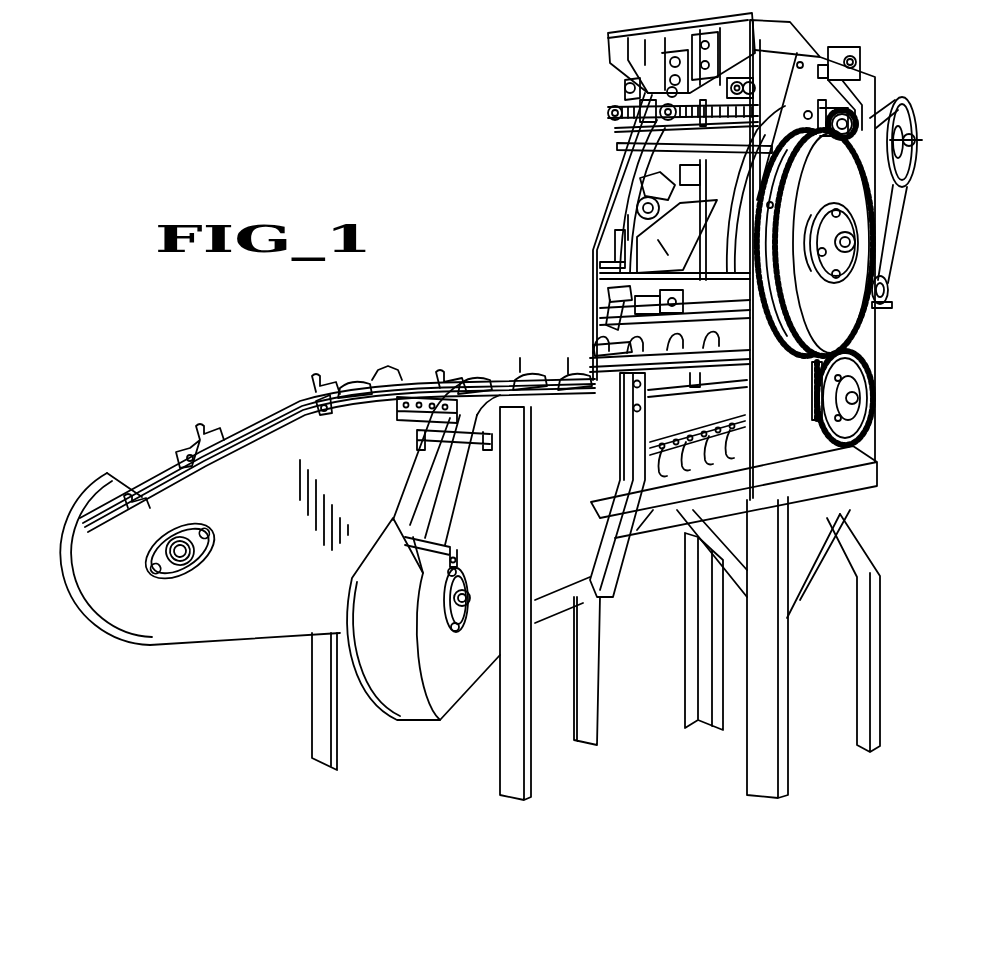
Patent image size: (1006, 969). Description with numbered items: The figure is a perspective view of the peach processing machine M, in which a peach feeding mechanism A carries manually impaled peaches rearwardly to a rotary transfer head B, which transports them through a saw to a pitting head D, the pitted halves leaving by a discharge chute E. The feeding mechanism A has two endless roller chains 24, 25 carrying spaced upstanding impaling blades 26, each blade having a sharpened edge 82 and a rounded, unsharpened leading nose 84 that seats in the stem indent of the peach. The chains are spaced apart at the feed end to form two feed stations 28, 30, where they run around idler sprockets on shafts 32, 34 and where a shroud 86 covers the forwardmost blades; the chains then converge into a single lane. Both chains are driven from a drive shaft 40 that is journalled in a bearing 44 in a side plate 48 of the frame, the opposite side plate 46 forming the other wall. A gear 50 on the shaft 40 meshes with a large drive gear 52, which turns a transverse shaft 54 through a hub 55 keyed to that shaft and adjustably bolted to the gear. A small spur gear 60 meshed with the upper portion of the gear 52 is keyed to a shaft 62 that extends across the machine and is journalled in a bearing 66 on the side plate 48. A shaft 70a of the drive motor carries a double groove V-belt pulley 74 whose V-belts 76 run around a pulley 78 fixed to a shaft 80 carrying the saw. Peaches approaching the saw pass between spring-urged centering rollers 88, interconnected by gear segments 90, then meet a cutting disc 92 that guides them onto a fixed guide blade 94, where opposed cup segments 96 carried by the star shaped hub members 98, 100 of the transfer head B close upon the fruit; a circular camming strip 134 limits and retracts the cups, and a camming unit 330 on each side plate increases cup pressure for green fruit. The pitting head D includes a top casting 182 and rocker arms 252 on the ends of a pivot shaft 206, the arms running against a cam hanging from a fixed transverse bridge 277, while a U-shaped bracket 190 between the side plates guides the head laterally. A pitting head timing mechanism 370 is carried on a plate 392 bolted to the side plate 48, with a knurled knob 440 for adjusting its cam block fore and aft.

The transverse bridge 277 is at (607, 37).
The rocker arm 252 is at (640, 85).
The pivot shaft 206 is at (759, 79).
The top casting 182 is at (638, 108).
The camming unit 330 is at (615, 129).
The U-shaped bracket 190 is at (617, 147).
The peach processing machine M is at (545, 117).
The pitting head D is at (680, 172).
The star shaped hub member 98 is at (640, 182).
The cup segments 96 is at (636, 206).
The rotary transfer head B is at (630, 222).
The circular camming strip 134 is at (620, 238).
The discharge chute E is at (660, 247).
The side plate 46 is at (606, 265).
The gear segments 90 is at (620, 305).
The cutting disc 92 is at (615, 310).
The centering rollers 88 is at (605, 352).
The guide blade 94 is at (718, 345).
The side plate 48 is at (707, 409).
The bearing 66 is at (838, 110).
The plate 392 is at (843, 52).
The pitting head timing mechanism 370 is at (870, 58).
The knurled knob 440 is at (860, 62).
The small spur gear 60 is at (842, 138).
The shaft 62 is at (829, 157).
The hub member 100 is at (762, 197).
The shaft 70a is at (916, 142).
The double groove V-belt pulley 74 is at (908, 164).
The V-belts 76 is at (895, 210).
The transverse shaft 54 is at (852, 243).
The hub 55 is at (848, 264).
The shaft 80 is at (890, 290).
The double groove pulley 78 is at (885, 306).
The large drive gear 52 is at (824, 243).
The gear 50 is at (870, 376).
The drive shaft 40 is at (868, 398).
The bearing 44 is at (812, 384).
The endless roller chain 25 is at (748, 430).
The endless roller chain 24 is at (400, 407).
The impaling blades 26 is at (205, 442).
The leading nose 84 is at (320, 375).
The sharpened edge 82 is at (332, 372).
The peach feeding mechanism A is at (258, 395).
The feed station 28 is at (120, 470).
The shroud 86 is at (297, 619).
The shaft 32 is at (187, 563).
The shaft 34 is at (472, 602).
The feed station 30 is at (405, 730).